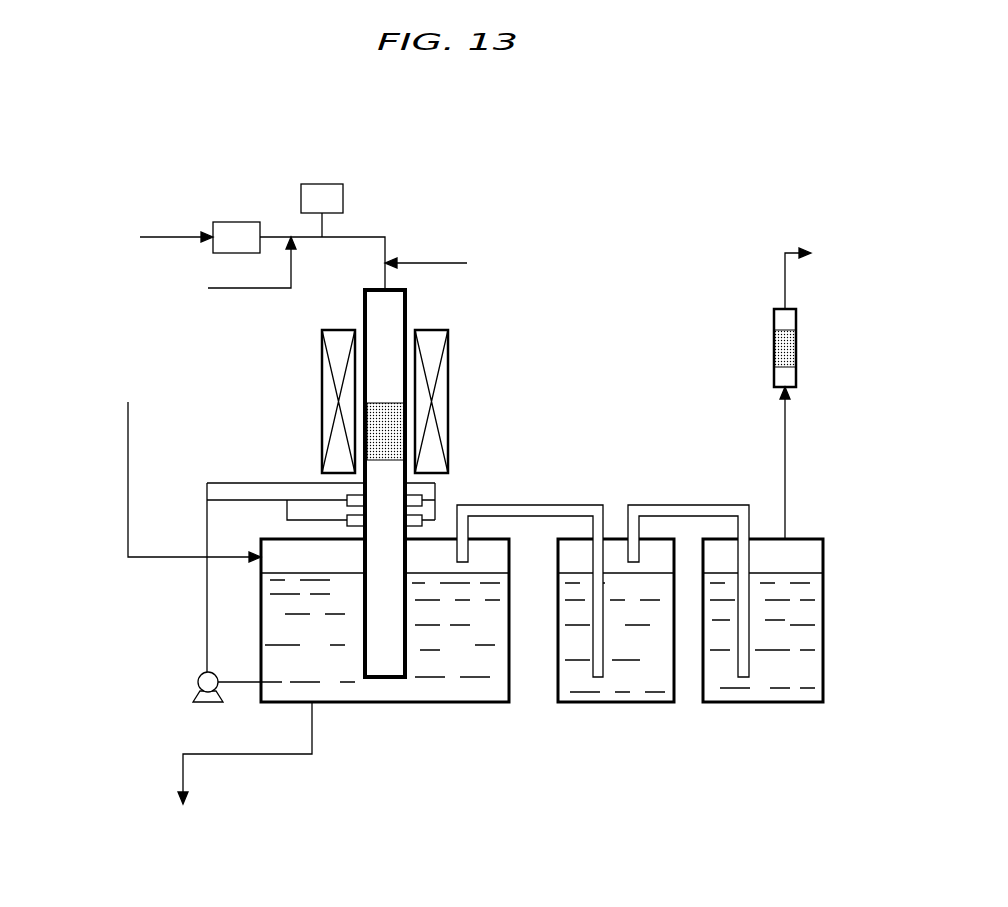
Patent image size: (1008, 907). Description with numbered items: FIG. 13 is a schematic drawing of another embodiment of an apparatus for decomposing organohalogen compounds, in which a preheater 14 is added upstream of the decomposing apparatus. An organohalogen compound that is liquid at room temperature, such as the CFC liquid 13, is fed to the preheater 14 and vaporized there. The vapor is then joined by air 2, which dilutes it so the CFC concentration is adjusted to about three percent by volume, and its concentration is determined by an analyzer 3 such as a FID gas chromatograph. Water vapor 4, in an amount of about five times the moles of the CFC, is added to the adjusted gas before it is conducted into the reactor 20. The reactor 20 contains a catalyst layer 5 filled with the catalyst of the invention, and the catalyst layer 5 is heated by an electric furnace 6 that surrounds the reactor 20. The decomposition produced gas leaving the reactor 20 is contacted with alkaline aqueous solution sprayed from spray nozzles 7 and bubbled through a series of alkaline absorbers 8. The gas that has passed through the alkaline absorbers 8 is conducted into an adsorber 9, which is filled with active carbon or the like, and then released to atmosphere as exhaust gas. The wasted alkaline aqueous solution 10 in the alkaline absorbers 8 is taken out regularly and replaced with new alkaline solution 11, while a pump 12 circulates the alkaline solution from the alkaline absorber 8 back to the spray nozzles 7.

The air 2 is at (220, 269).
The analyzer 3 is at (343, 191).
The water vapor 4 is at (453, 250).
The catalyst layer 5 is at (403, 418).
The electric furnace 6 is at (448, 363).
The spray nozzles 7 is at (432, 520).
The alkaline absorbers 8 is at (807, 703).
The adsorber 9 is at (774, 341).
The wasted alkaline aqueous solution 10 is at (239, 780).
The new alkaline solution 11 is at (173, 446).
The pump 12 is at (193, 699).
The CFC 113 liquid 13 is at (145, 213).
The preheater 14 is at (232, 222).
The reactor 20 is at (407, 327).